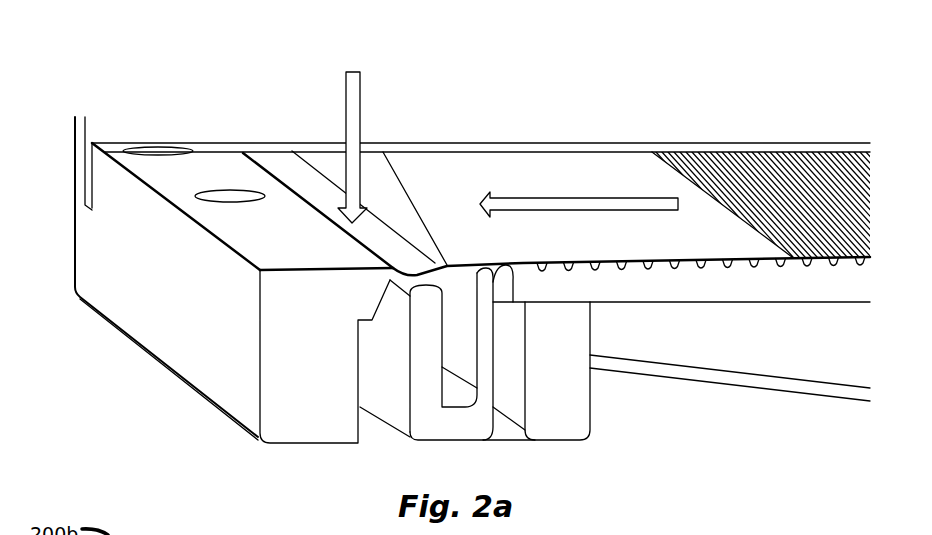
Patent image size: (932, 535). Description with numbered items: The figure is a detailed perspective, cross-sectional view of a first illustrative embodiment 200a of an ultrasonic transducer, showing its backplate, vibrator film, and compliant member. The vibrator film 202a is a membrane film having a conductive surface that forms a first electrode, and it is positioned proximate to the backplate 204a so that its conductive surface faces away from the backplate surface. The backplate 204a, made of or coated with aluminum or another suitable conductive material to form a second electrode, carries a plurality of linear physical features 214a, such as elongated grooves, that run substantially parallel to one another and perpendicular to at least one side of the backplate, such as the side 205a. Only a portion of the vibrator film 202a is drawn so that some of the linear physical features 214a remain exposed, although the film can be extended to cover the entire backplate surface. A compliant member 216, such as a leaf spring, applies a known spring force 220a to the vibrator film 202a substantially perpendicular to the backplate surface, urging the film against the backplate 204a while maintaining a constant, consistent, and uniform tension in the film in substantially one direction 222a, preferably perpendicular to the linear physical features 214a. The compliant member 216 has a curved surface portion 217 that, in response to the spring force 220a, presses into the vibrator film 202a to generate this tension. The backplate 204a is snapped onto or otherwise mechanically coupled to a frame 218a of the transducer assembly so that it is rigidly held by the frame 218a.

The first illustrative embodiment of the ultrasonic transducer 200a is at (117, 58).
The vibrator film 202a is at (578, 180).
The backplate 204a is at (768, 302).
The side of the backplate 205a is at (752, 291).
The plurality of linear physical features 214a is at (806, 143).
The compliant member 216 is at (222, 128).
The curved surface portion 217 is at (288, 172).
The frame 218a is at (306, 459).
The known spring force 220a is at (361, 112).
The direction of tension 222a is at (610, 210).